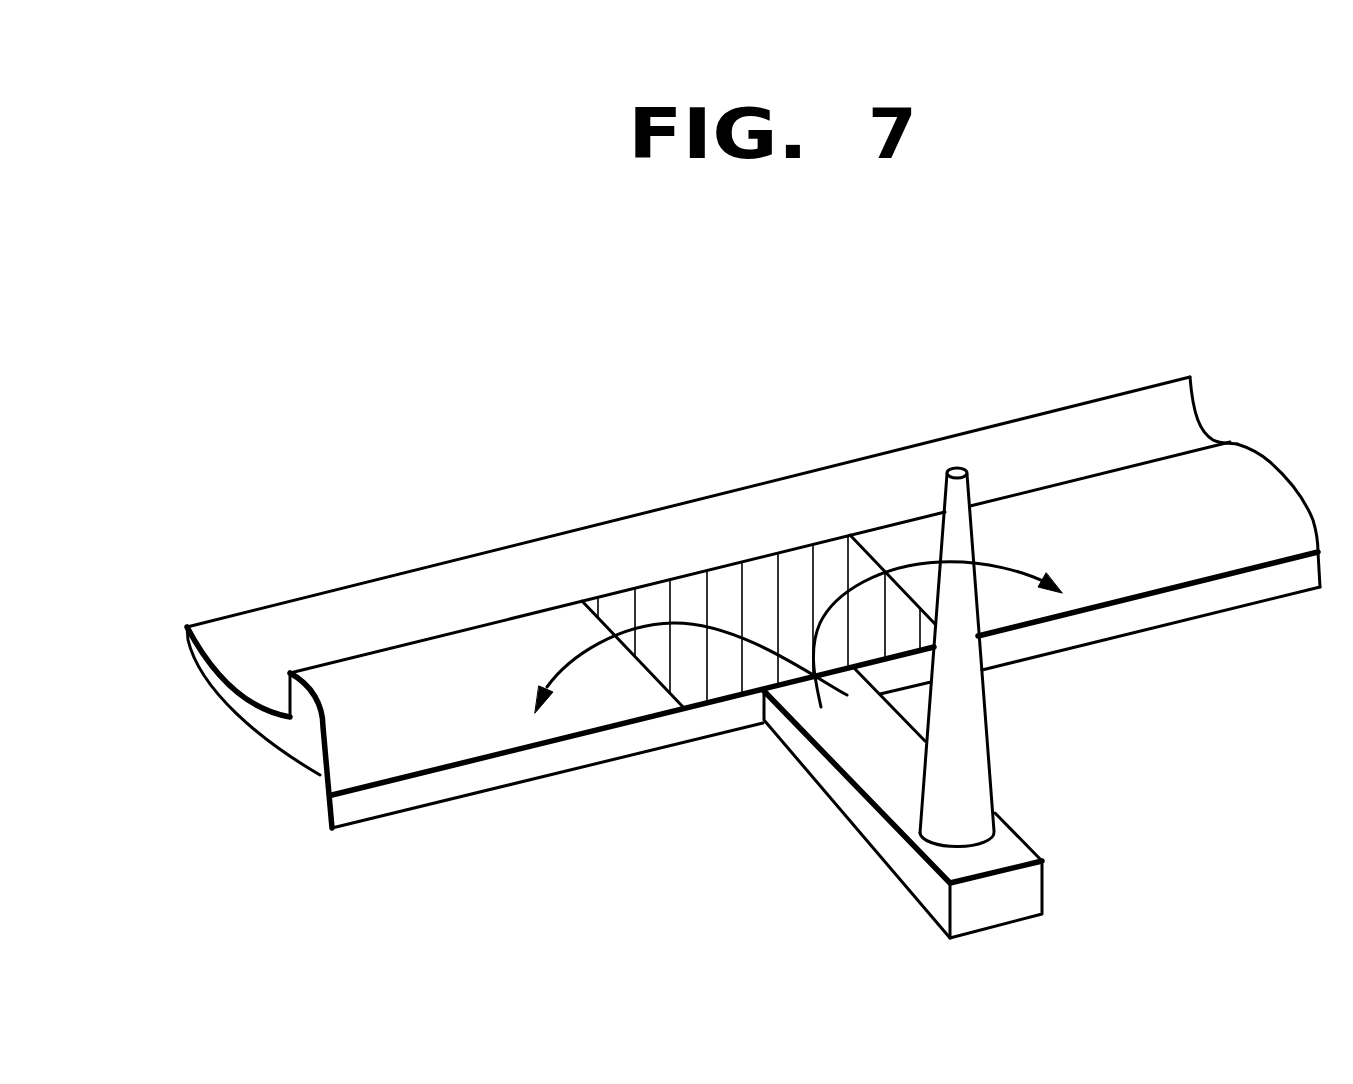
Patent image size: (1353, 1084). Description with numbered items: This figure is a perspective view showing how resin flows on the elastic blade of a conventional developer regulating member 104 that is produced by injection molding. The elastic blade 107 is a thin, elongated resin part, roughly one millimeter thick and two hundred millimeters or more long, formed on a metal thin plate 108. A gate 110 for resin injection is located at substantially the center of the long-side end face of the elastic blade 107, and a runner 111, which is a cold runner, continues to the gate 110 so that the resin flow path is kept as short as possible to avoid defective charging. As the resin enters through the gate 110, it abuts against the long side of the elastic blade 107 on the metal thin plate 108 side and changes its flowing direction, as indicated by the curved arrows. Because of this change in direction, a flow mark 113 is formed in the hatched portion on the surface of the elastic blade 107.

The developer regulating member 104 is at (817, 382).
The elastic blade 107 is at (330, 603).
The metal thin plate 108 is at (437, 787).
The gate 110 is at (831, 715).
The runner 111 is at (975, 703).
The flow mark 113 is at (725, 590).